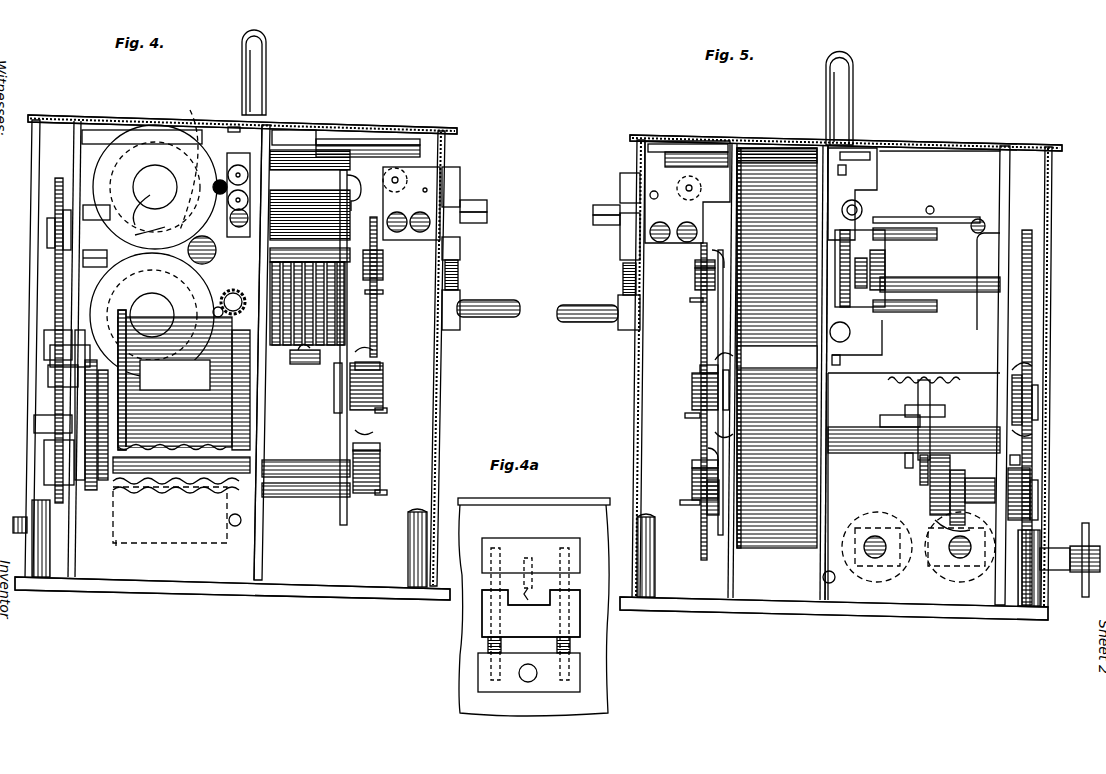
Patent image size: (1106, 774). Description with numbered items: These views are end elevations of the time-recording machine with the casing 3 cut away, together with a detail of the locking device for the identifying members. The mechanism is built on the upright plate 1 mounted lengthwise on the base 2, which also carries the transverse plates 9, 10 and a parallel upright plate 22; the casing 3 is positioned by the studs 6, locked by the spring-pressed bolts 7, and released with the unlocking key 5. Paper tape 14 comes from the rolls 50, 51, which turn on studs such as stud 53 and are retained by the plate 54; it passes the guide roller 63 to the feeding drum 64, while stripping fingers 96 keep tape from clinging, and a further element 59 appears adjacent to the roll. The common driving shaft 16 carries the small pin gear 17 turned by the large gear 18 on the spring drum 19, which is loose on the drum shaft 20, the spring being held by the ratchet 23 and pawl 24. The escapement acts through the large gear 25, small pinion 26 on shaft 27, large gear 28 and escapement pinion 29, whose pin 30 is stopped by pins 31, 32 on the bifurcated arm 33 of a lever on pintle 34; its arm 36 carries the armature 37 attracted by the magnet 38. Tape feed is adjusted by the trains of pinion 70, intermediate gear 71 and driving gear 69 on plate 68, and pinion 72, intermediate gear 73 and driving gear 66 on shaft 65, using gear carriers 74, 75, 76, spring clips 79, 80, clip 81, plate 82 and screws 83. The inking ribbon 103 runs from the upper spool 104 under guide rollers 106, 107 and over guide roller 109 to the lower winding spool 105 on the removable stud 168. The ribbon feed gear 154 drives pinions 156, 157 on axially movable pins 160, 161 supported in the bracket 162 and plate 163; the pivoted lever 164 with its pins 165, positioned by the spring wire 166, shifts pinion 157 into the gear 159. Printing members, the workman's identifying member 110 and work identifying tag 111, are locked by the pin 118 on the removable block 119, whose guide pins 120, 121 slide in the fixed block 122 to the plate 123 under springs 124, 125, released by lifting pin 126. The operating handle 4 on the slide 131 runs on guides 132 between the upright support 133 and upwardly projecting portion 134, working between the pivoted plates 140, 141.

In FIG. 4, the upright plate 1 is at (253, 556).
In FIG. 5, the upright plate 1 is at (812, 477).
In FIG. 4, the base 2 is at (295, 595).
In FIG. 5, the base 2 is at (753, 603).
In FIG. 4, the casing 3 is at (310, 125).
In FIG. 4A, the casing 3 is at (530, 498).
In FIG. 5, the casing 3 is at (920, 146).
In FIG. 4, the operating handle 4 is at (266, 72).
In FIG. 5, the operating handle 4 is at (860, 100).
In FIG. 4, the unlocking key 5 is at (13, 520).
In FIG. 5, the unlocking key 5 is at (1072, 548).
In FIG. 4, the studs 6 is at (45, 545).
In FIG. 5, the studs 6 is at (655, 573).
In FIG. 4, the spring-pressed bolts 7 is at (229, 520).
In FIG. 5, the spring-pressed bolts 7 is at (832, 582).
In FIG. 4, the transverse plate 9 is at (160, 590).
In FIG. 5, the transverse plate 10 is at (945, 610).
In FIG. 4, the paper tape 14 is at (300, 176).
In FIG. 4, the feed-tape driving shaft 16 is at (170, 475).
In FIG. 5, the feed-tape driving shaft 16 is at (712, 512).
In FIG. 4, the small pin gear 17 is at (108, 482).
In FIG. 5, the small pin gear 17 is at (965, 500).
In FIG. 4, the large gear 18 is at (145, 275).
In FIG. 4, the spring drum 19 is at (242, 398).
In FIG. 4, the drum shaft 20 is at (34, 422).
In FIG. 4, the upright plate 22 is at (44, 340).
In FIG. 5, the upright plate 22 is at (1000, 355).
In FIG. 4, the ratchet 23 is at (48, 378).
In FIG. 4, the pawl 24 is at (50, 355).
In FIG. 4, the large gear 25 is at (150, 405).
In FIG. 5, the large gear 25 is at (1030, 478).
In FIG. 5, the small pinion 26 is at (1020, 460).
In FIG. 5, the shaft 27 is at (955, 470).
In FIG. 5, the large gear 28 is at (936, 420).
In FIG. 5, the escapement pinion 29 is at (880, 418).
In FIG. 5, the pin 30 is at (905, 462).
In FIG. 5, the pin 31 is at (920, 470).
In FIG. 5, the pin 32 is at (895, 380).
In FIG. 5, the bifurcated arm 33 is at (915, 412).
In FIG. 5, the pintle 34 is at (840, 427).
In FIG. 5, the arm 36 is at (935, 480).
In FIG. 5, the armature 37 is at (853, 516).
In FIG. 5, the magnet 38 is at (915, 580).
In FIG. 5, the roll 50 is at (777, 348).
In FIG. 5, the roll 51 is at (700, 258).
In FIG. 5, the stud 53 is at (708, 452).
In FIG. 5, the plate 54 is at (722, 320).
In FIG. 5, the band 59 is at (768, 135).
In FIG. 4, the guide roller 63 is at (352, 200).
In FIG. 4, the feeding drum 64 is at (328, 312).
In FIG. 4, the shaft 65 is at (95, 248).
In FIG. 5, the shaft 65 is at (925, 268).
In FIG. 4, the driving gear 66 is at (55, 205).
In FIG. 5, the driving gear 66 is at (1027, 228).
In FIG. 4, the plate 68 is at (347, 428).
In FIG. 5, the plate 68 is at (718, 532).
In FIG. 4, the driving gear 69 is at (380, 248).
In FIG. 5, the driving gear 69 is at (695, 274).
In FIG. 4, the pinion 70 is at (380, 475).
In FIG. 5, the pinion 70 is at (692, 485).
In FIG. 4, the intermediate gear 71 is at (380, 366).
In FIG. 5, the intermediate gear 71 is at (700, 365).
In FIG. 4, the pinion 72 is at (44, 445).
In FIG. 5, the pinion 72 is at (1038, 508).
In FIG. 5, the intermediate gear 73 is at (1038, 422).
In FIG. 4, the gear carrier 74 is at (380, 452).
In FIG. 5, the gear carrier 74 is at (692, 466).
In FIG. 4, the gear carrier 75 is at (383, 388).
In FIG. 5, the gear carrier 75 is at (692, 390).
In FIG. 4, the gear carrier 76 is at (383, 268).
In FIG. 5, the gear carrier 76 is at (695, 290).
In FIG. 4, the spring clip 79 is at (387, 494).
In FIG. 5, the spring clip 79 is at (688, 505).
In FIG. 4, the spring clip 80 is at (383, 292).
In FIG. 5, the spring clip 80 is at (692, 304).
In FIG. 4, the clip 81 is at (387, 411).
In FIG. 5, the clip 81 is at (690, 418).
In FIG. 4, the plate 82 is at (334, 388).
In FIG. 4, the screws 83 is at (377, 394).
In FIG. 4, the stripping fingers 96 is at (301, 365).
In FIG. 4, the inking ribbon 103 is at (194, 158).
In FIG. 4, the upper spool 104 is at (160, 112).
In FIG. 4, the lower winding spool 105 is at (200, 270).
In FIG. 4, the guide roller 106 is at (240, 183).
In FIG. 4, the guide roller 107 is at (400, 190).
In FIG. 4, the guide roller 109 is at (151, 210).
In FIG. 4, the workman's identifying member 110 is at (478, 224).
In FIG. 5, the workman's identifying member 110 is at (600, 224).
In FIG. 4, the work identifying tag 111 is at (492, 188).
In FIG. 5, the work identifying tag 111 is at (593, 205).
In FIG. 4A, the pin 118 is at (531, 613).
In FIG. 4, the removable block 119 is at (460, 175).
In FIG. 4A, the removable block 119 is at (505, 542).
In FIG. 5, the removable block 119 is at (620, 180).
In FIG. 4A, the guide pin 120 is at (512, 570).
In FIG. 4A, the guide pin 121 is at (560, 597).
In FIG. 4, the fixed block 122 is at (460, 250).
In FIG. 4A, the fixed block 122 is at (482, 623).
In FIG. 5, the fixed block 122 is at (625, 245).
In FIG. 4, the plate 123 is at (455, 330).
In FIG. 4A, the plate 123 is at (478, 680).
In FIG. 5, the plate 123 is at (620, 328).
In FIG. 4, the spring 124 is at (458, 275).
In FIG. 4A, the spring 124 is at (488, 647).
In FIG. 4A, the spring 125 is at (570, 648).
In FIG. 5, the spring 125 is at (623, 280).
In FIG. 4, the pin 126 is at (508, 292).
In FIG. 4A, the pin 126 is at (528, 682).
In FIG. 5, the pin 126 is at (580, 303).
In FIG. 4, the slide 131 is at (280, 138).
In FIG. 5, the slide 131 is at (846, 170).
In FIG. 4, the guides 132 is at (383, 150).
In FIG. 5, the guides 132 is at (700, 160).
In FIG. 4, the upright support 133 is at (430, 150).
In FIG. 5, the upright support 133 is at (655, 158).
In FIG. 4, the upwardly projecting portion 134 is at (238, 128).
In FIG. 5, the upwardly projecting portion 134 is at (850, 162).
In FIG. 4, the plate 140 is at (345, 138).
In FIG. 5, the plate 141 is at (675, 150).
In FIG. 4, the ribbon feed gear 154 is at (152, 315).
In FIG. 4, the pinion 156 is at (198, 171).
In FIG. 4, the pinion 157 is at (185, 305).
In FIG. 5, the gear 159 is at (942, 382).
In FIG. 4, the pin 160 is at (210, 188).
In FIG. 5, the pin 160 is at (862, 207).
In FIG. 4, the pin 161 is at (248, 298).
In FIG. 5, the pin 161 is at (850, 332).
In FIG. 5, the bracket 162 is at (848, 352).
In FIG. 4, the plate 163 is at (105, 125).
In FIG. 5, the plate 163 is at (970, 160).
In FIG. 5, the pivoted lever 164 is at (865, 250).
In FIG. 5, the pins 165 is at (930, 240).
In FIG. 5, the spring wire 166 is at (968, 208).
In FIG. 4, the removable stud 168 is at (165, 248).